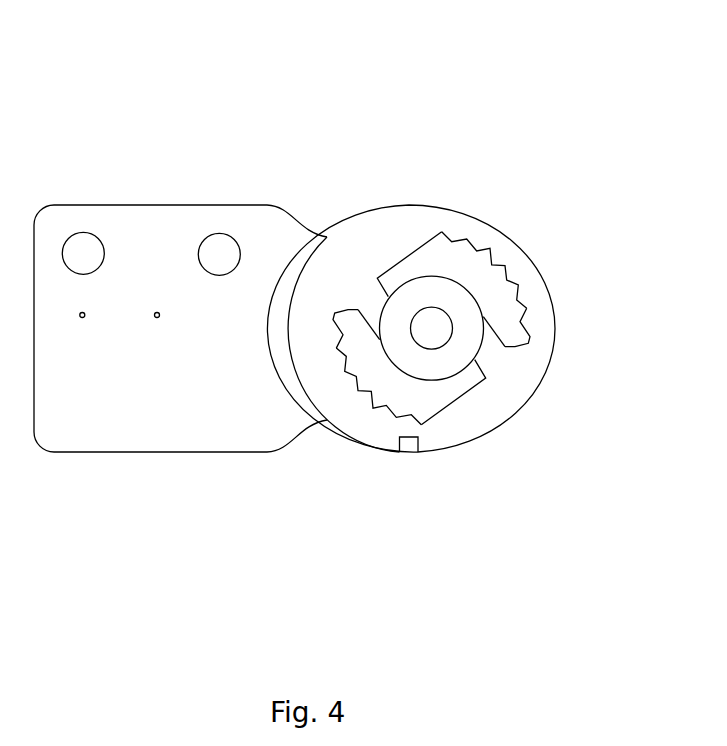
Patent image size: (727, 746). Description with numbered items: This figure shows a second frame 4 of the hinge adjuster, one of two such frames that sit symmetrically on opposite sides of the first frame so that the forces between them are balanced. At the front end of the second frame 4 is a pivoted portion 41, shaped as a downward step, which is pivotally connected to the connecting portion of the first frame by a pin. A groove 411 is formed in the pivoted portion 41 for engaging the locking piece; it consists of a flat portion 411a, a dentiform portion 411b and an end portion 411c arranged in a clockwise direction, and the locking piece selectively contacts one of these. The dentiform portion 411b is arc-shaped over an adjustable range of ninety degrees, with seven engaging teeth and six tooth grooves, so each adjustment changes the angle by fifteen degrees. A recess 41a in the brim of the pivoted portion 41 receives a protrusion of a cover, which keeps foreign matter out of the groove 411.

The second frame 4 is at (153, 33).
The pivoted portion 41 is at (515, 375).
The recess 41a is at (407, 445).
The groove 411 is at (553, 121).
The flat portion 411a is at (412, 272).
The dentiform portion 411b is at (491, 257).
The end portion 411c is at (512, 347).